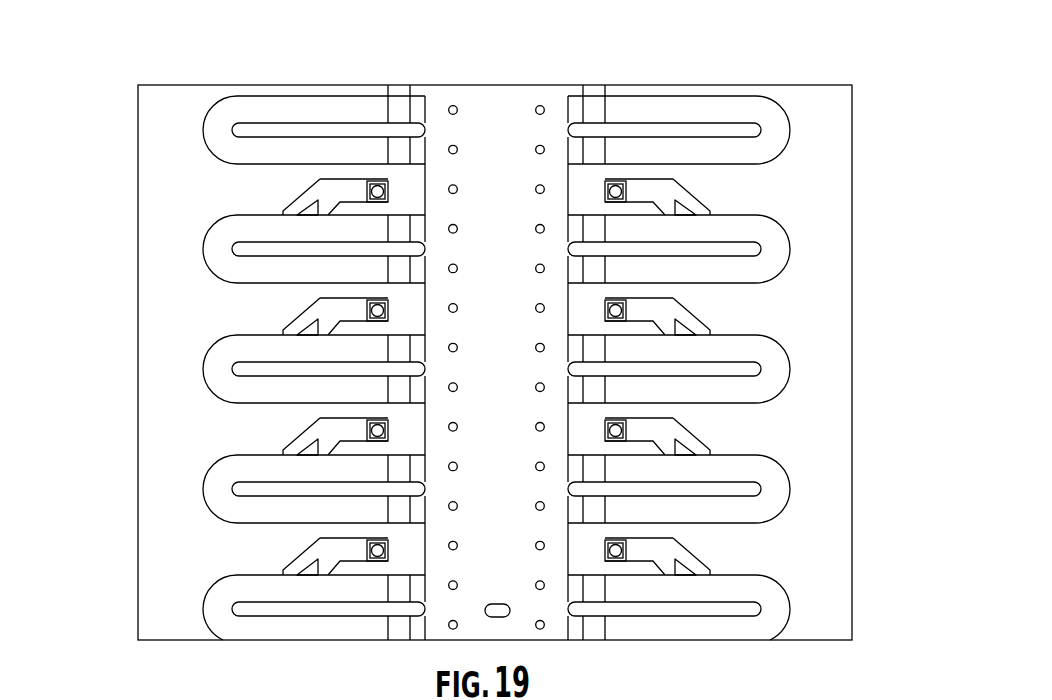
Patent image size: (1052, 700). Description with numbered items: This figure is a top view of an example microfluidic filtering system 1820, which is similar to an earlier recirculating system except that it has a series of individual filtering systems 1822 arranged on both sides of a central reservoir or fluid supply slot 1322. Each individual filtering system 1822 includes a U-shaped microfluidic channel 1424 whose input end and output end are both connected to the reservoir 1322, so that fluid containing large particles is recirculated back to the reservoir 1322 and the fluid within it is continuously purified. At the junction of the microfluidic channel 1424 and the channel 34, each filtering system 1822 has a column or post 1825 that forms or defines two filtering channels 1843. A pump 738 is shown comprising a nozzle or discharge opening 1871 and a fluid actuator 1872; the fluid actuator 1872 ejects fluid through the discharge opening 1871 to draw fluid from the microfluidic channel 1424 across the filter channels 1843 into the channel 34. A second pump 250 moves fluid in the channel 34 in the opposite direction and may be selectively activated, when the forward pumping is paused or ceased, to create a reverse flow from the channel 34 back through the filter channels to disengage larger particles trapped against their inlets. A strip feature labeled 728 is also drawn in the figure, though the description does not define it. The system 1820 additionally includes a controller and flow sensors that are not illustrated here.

The microfluidic filtering system 1820 is at (110, 118).
The individual filtering system 1822 is at (207, 106).
The central reservoir or fluid supply slot 1322 is at (497, 85).
The microfluidic channel 1424 is at (240, 523).
The strip 728 is at (414, 350).
The pump 738 is at (405, 304).
The channel 34 is at (330, 410).
The filtering channel 1843 is at (292, 456).
The column or post 1825 is at (320, 447).
The fluid actuator 1872 is at (305, 325).
The nozzle or discharge opening 1871 is at (390, 316).
The pump 250 is at (410, 390).